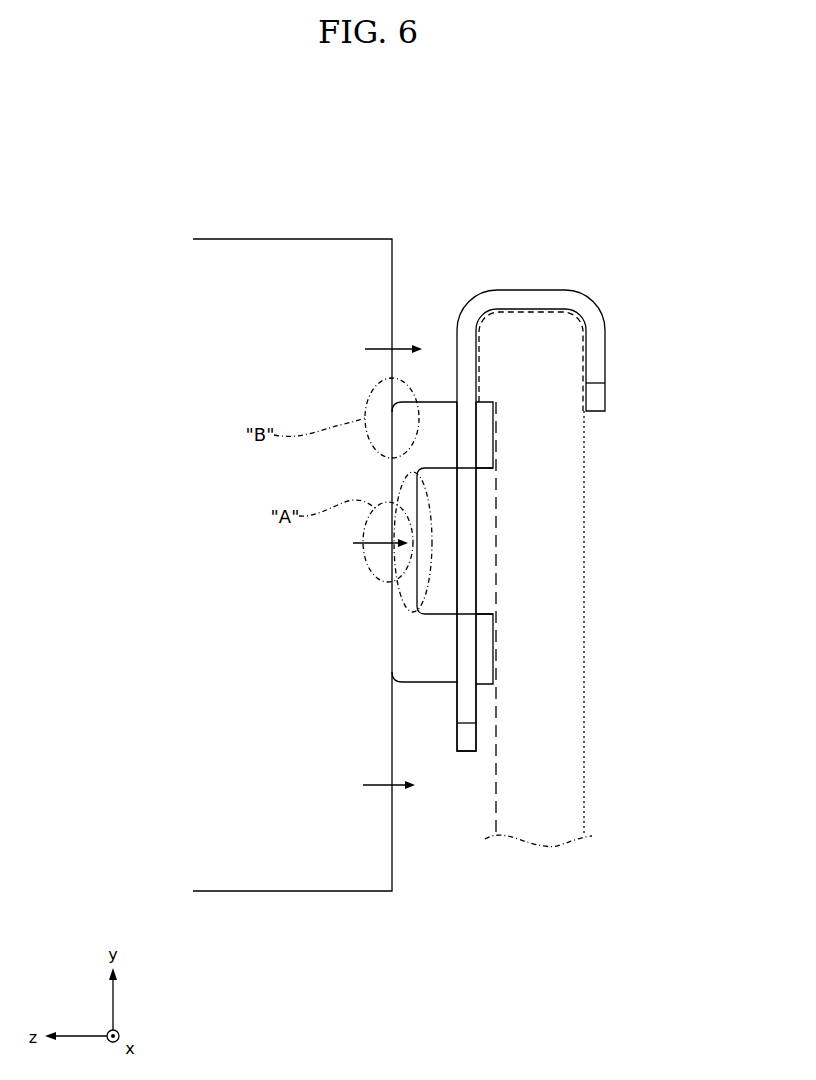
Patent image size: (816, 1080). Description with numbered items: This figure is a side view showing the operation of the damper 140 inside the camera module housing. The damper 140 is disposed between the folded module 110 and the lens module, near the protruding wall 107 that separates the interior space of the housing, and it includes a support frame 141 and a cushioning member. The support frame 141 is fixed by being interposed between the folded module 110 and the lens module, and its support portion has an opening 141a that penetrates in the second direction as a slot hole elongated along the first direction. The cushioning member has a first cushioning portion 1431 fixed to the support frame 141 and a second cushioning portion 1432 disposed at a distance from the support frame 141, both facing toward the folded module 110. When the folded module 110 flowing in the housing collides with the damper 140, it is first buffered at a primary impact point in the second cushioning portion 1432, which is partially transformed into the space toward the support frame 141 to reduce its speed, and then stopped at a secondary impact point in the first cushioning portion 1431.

The folded module 110 is at (268, 224).
The damper 140 is at (544, 270).
The support frame 141 is at (457, 348).
The opening 141a is at (465, 607).
The protruding wall 107 is at (584, 517).
The first cushioning portion 1431 is at (435, 395).
The second cushioning portion 1432 is at (373, 570).